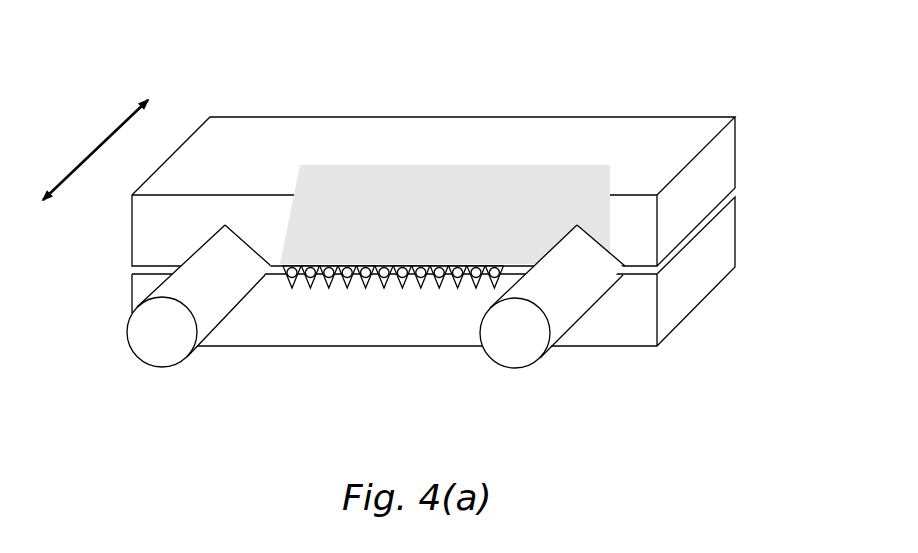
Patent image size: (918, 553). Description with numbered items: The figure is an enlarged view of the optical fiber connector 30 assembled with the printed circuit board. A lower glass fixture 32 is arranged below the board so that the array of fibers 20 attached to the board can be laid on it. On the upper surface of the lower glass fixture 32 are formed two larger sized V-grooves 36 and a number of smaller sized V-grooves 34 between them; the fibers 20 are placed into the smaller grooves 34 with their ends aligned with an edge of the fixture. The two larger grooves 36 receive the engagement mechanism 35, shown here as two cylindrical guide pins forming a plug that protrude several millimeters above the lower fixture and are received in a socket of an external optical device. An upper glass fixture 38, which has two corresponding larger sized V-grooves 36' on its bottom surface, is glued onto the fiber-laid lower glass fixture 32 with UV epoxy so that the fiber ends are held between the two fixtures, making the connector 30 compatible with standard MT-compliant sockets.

The optical fiber connector 30 is at (135, 35).
The fibers 20 is at (384, 260).
The lower glass fixture 32 is at (705, 282).
The upper glass fixture 38 is at (707, 174).
The smaller sized V-grooves 34 is at (328, 292).
The engagement mechanism 35 is at (145, 340).
The larger sized V-grooves 36 is at (392, 332).
The larger sized V-grooves of upper glass fixture 36' is at (468, 145).